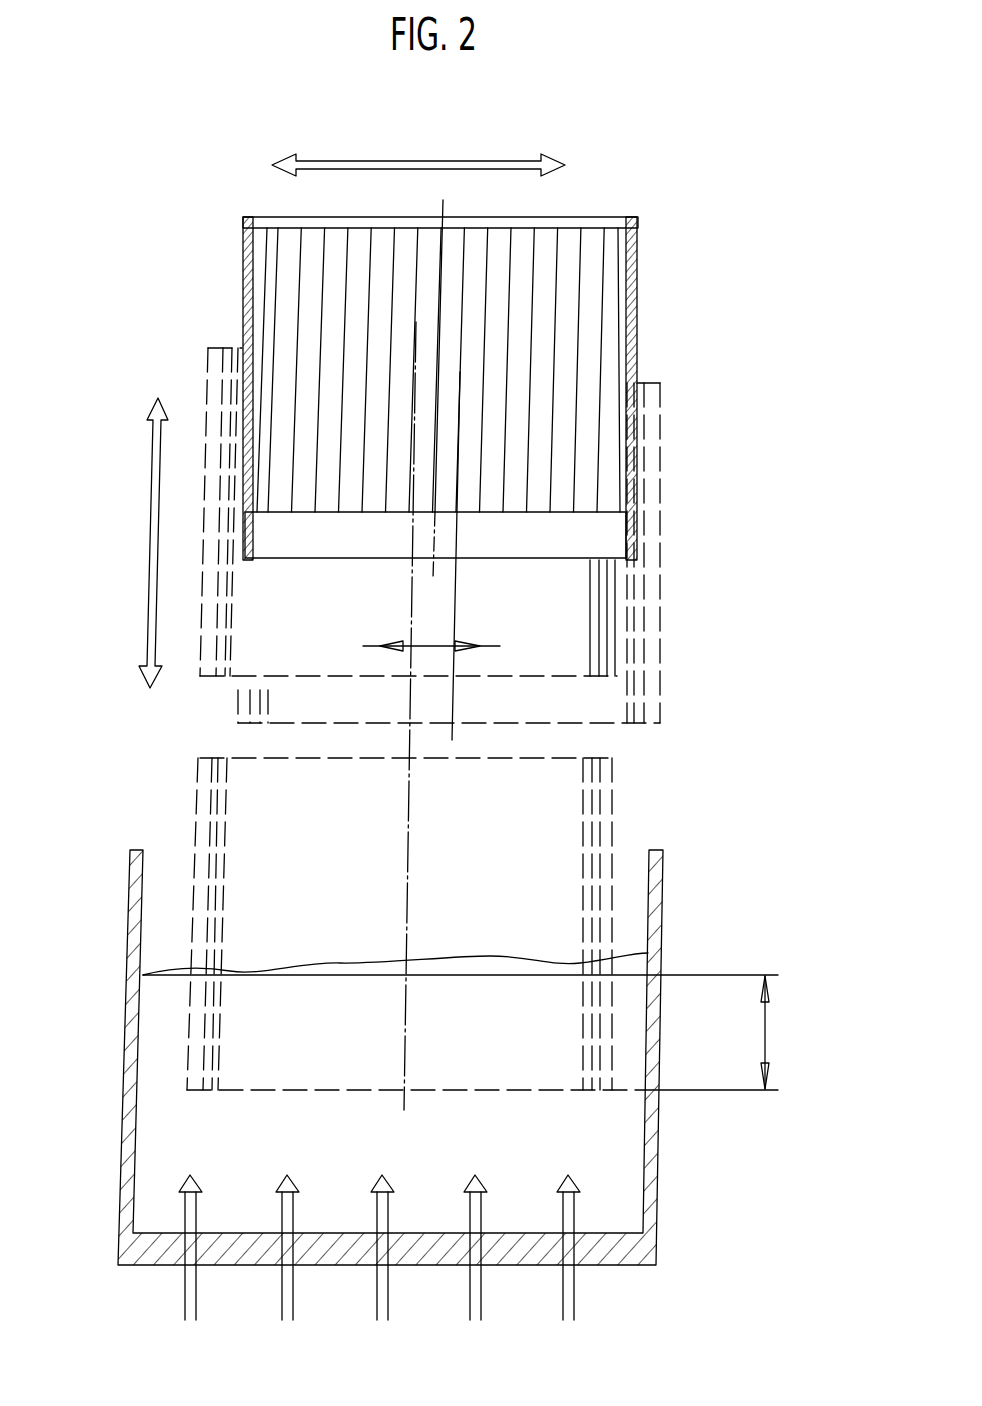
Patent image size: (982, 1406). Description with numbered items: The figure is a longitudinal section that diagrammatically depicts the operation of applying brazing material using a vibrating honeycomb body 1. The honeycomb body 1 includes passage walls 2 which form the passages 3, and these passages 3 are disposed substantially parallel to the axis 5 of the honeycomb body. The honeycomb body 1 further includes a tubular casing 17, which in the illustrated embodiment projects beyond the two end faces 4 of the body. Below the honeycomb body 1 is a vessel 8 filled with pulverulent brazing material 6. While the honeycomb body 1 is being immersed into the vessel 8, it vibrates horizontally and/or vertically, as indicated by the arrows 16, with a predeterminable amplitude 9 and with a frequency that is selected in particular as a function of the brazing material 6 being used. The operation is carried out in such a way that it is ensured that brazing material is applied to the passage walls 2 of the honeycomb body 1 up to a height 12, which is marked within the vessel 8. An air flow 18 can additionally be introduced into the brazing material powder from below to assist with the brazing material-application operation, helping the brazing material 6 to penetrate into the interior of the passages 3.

The honeycomb body 1 is at (303, 332).
The passage walls 2 is at (578, 432).
The passages 3 is at (592, 320).
The end faces 4 is at (285, 220).
The axis 5 is at (445, 207).
The pulverulent brazing material 6 is at (175, 1152).
The vessel 8 is at (650, 1192).
The amplitude 9 is at (430, 645).
The height 12 is at (768, 1030).
The arrows 16 is at (513, 163).
The tubular casing 17 is at (637, 258).
The air flow 18 is at (182, 1300).